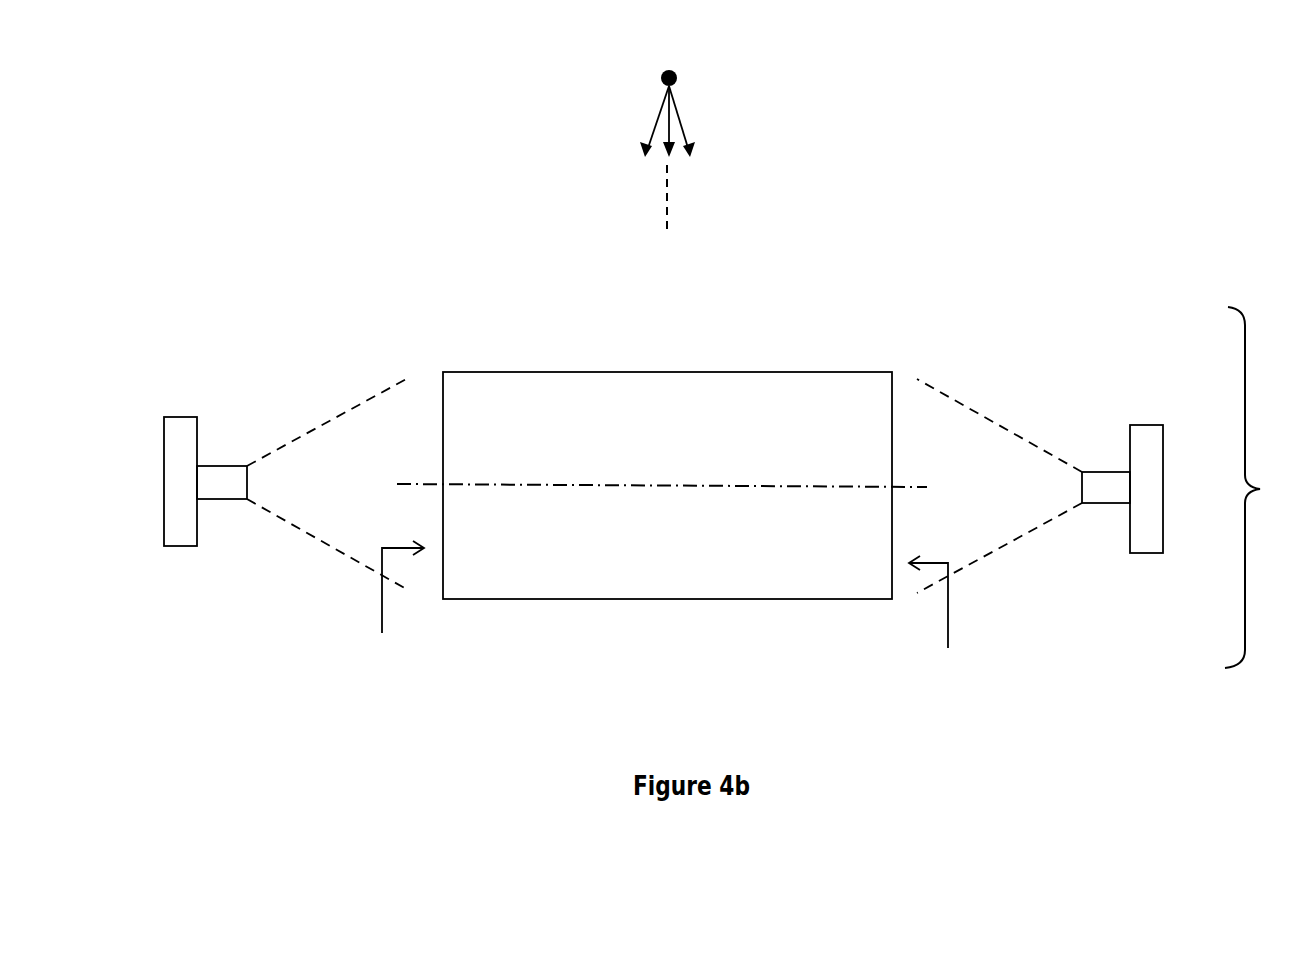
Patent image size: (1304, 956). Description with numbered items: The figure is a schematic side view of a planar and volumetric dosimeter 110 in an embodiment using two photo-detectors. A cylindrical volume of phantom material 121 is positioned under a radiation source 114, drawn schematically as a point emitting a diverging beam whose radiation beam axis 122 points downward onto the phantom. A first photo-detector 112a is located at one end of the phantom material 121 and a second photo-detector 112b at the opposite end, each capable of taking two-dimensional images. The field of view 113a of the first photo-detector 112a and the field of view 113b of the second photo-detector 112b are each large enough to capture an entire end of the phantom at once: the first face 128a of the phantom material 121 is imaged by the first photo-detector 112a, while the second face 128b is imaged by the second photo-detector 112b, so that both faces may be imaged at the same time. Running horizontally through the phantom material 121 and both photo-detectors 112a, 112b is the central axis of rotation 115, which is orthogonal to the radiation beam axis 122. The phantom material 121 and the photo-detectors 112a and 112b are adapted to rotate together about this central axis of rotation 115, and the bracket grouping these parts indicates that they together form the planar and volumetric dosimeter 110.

The planar and volumetric dosimeter 110 is at (1264, 487).
The first photo-detector 112a is at (182, 428).
The second photo-detector 112b is at (1145, 432).
The field of view of first photo-detector 113a is at (316, 538).
The field of view of second photo-detector 113b is at (1008, 542).
The radiation source 114 is at (692, 77).
The central axis of rotation 115 is at (416, 483).
The volume of phantom material 121 is at (612, 407).
The radiation beam axis 122 is at (680, 205).
The first face of phantom material 128a is at (389, 605).
The second face of phantom material 128b is at (945, 620).